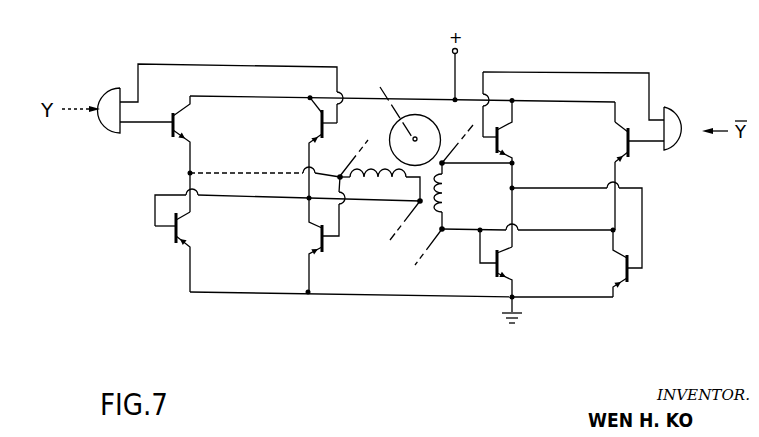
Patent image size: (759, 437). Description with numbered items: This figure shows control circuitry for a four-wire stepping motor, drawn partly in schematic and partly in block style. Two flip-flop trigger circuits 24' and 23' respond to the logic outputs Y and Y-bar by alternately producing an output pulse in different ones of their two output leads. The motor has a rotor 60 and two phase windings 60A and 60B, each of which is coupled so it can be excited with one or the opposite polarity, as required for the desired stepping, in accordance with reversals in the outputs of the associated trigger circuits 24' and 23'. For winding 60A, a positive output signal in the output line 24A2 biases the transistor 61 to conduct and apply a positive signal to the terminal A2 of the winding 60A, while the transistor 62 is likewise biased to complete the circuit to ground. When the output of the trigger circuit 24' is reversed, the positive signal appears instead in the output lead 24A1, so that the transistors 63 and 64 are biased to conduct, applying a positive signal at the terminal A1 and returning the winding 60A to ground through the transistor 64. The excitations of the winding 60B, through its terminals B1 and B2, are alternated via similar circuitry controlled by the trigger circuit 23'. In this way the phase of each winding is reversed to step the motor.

The trigger circuit 24' is at (99, 130).
The output lead 24A1 is at (149, 121).
The output line 24A2 is at (218, 65).
The transistor 61 is at (318, 121).
The transistor 62 is at (180, 227).
The transistor 63 is at (180, 123).
The transistor 64 is at (317, 238).
The rotor 60 is at (417, 118).
The motor phase winding 60A is at (378, 173).
The motor phase winding 60B is at (447, 201).
The terminal A1 is at (339, 175).
The terminal A2 is at (414, 204).
The terminal B1 is at (444, 164).
The terminal B2 is at (442, 231).
The trigger circuit 23' is at (701, 114).